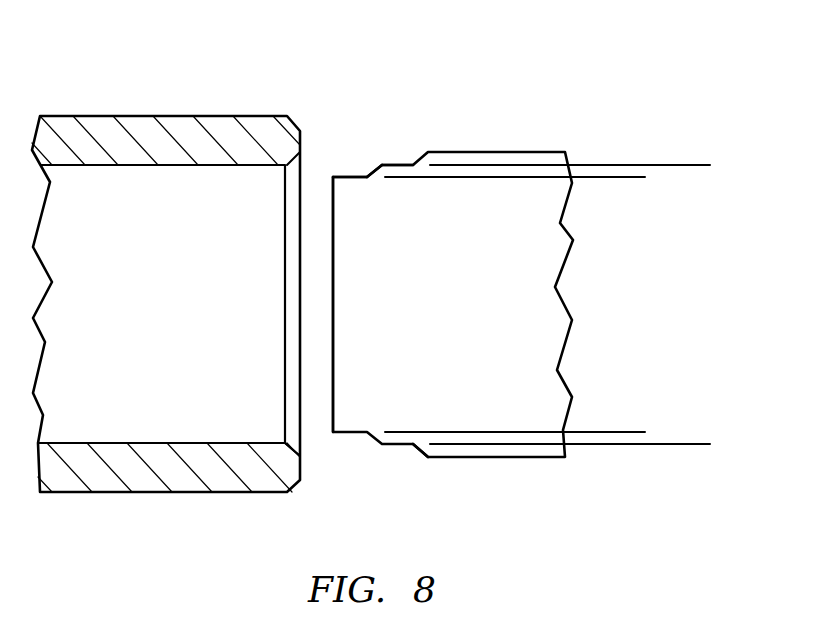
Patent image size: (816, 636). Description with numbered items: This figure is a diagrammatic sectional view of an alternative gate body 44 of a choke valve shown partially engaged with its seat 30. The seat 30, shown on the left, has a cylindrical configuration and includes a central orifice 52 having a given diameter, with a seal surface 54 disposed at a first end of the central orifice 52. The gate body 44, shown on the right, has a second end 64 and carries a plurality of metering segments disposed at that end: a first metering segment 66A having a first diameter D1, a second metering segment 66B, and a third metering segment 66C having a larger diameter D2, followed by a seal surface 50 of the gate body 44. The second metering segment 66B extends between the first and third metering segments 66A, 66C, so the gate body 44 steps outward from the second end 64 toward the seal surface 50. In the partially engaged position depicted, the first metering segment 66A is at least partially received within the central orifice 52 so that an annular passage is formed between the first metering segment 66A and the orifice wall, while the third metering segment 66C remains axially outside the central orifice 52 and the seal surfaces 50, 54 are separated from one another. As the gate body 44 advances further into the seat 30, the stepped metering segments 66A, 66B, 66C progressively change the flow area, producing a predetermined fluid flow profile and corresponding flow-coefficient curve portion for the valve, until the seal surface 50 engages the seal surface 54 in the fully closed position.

The seat 30 is at (183, 102).
The central orifice 52 is at (151, 405).
The seal surface 54 is at (297, 442).
The second end 64 is at (333, 350).
The gate body 44 is at (522, 137).
The first metering segment 66A is at (350, 177).
The second metering segment 66B is at (372, 168).
The third metering segment 66C is at (403, 163).
The seal surface 50 is at (420, 450).
The first diameter D1 is at (635, 177).
The diameter D2 is at (698, 165).